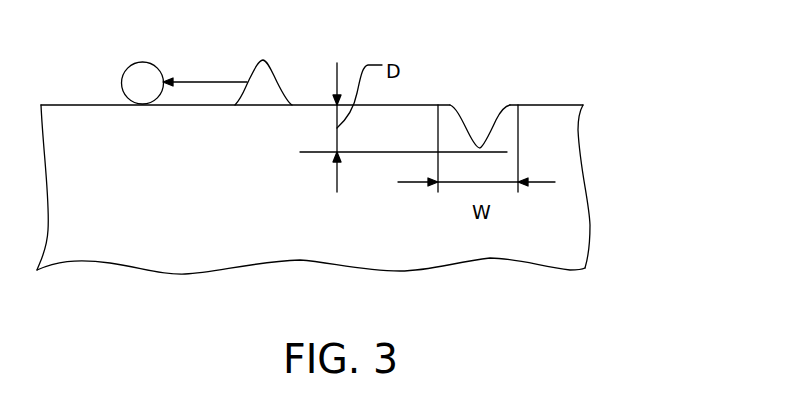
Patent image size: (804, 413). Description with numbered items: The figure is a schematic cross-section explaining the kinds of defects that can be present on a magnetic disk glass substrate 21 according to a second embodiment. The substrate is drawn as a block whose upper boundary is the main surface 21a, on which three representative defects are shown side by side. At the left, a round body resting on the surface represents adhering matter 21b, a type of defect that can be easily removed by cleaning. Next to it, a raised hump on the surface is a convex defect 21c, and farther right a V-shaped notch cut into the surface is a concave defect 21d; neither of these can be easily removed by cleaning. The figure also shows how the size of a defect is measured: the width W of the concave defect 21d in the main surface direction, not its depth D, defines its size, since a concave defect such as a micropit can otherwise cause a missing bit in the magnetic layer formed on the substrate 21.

The magnetic disk glass substrate 21 is at (570, 222).
The surface 21a is at (566, 103).
The adhering matter 21b is at (142, 83).
The convex defect 21c is at (263, 94).
The concave defect 21d is at (480, 116).